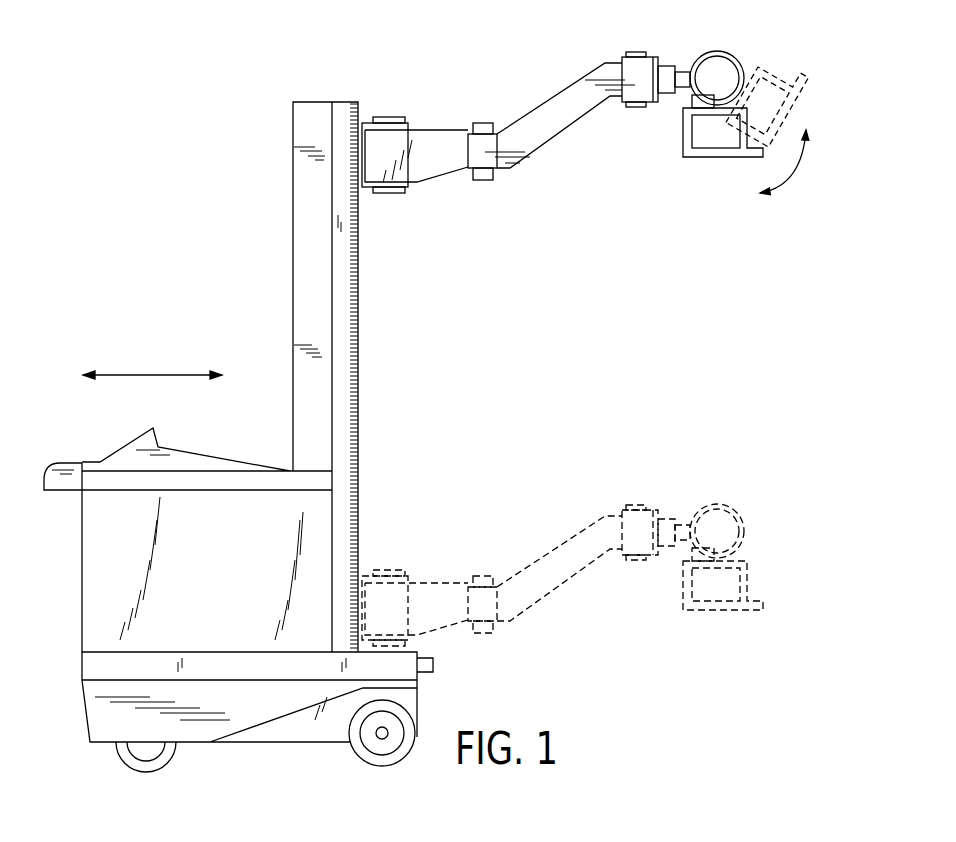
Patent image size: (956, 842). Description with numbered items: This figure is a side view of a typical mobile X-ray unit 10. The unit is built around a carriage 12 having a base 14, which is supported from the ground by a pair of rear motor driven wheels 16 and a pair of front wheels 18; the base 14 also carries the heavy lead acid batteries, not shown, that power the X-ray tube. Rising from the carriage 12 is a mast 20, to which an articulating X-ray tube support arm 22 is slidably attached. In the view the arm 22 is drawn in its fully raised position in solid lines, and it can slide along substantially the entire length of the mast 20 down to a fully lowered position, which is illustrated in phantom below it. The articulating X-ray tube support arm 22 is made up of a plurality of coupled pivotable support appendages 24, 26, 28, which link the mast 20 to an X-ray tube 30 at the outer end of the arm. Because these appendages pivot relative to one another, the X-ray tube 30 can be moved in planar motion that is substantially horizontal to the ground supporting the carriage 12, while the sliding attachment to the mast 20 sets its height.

The mobile X-ray unit 10 is at (423, 378).
The carriage 12 is at (220, 572).
The base 14 is at (273, 715).
The rear motor driven wheels 16 is at (163, 764).
The front wheels 18 is at (367, 766).
The mast 20 is at (308, 247).
The articulating X-ray tube support arm 22 is at (567, 162).
The pivotable support appendage 24 is at (437, 131).
The pivotable support appendage 26 is at (573, 85).
The pivotable support appendage 28 is at (672, 96).
The X-ray tube 30 is at (720, 51).